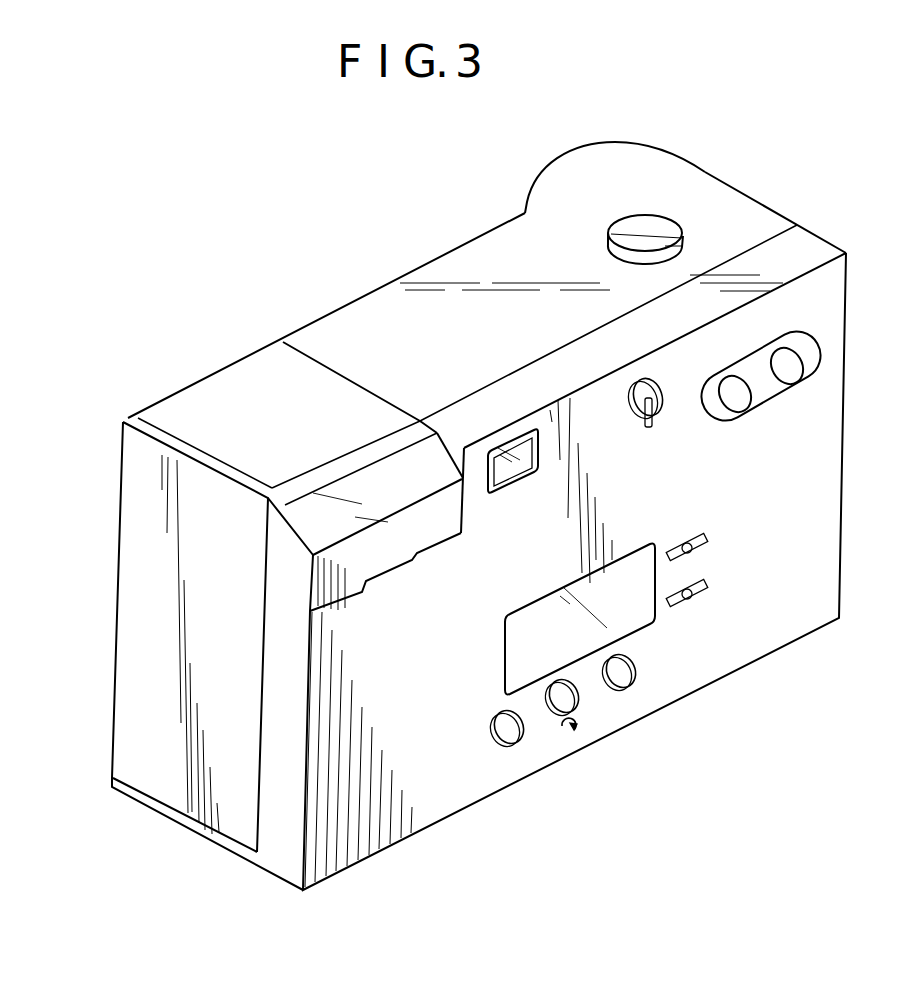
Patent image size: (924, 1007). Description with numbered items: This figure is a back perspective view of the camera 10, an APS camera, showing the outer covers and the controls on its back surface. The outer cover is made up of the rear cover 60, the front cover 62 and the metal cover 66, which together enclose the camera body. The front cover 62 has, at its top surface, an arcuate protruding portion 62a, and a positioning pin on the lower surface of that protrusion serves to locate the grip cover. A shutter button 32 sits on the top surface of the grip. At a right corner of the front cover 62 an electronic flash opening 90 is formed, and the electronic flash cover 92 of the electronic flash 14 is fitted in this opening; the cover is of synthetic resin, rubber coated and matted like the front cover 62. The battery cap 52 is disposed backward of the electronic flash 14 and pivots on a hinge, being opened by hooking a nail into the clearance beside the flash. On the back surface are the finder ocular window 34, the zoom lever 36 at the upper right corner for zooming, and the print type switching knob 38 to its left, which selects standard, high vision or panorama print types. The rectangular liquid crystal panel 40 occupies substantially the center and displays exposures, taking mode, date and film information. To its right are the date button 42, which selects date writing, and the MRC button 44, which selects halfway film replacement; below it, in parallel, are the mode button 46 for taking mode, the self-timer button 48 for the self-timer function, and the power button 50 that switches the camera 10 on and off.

The camera 10 is at (320, 190).
The electronic flash 14 is at (219, 412).
The shutter button 32 is at (643, 230).
The finder ocular window 34 is at (503, 474).
The zoom lever 36 is at (758, 398).
The print type switching knob 38 is at (644, 392).
The liquid crystal panel 40 is at (525, 641).
The date button 42 is at (684, 546).
The MRC button 44 is at (690, 598).
The mode button 46 is at (520, 728).
The self-timer button 48 is at (567, 699).
The power button 50 is at (634, 666).
The battery cap 52 is at (270, 562).
The rear cover 60 is at (813, 524).
The front cover 62 is at (458, 271).
The protruding portion 62a is at (597, 168).
The metal cover 66 is at (145, 557).
The electronic flash opening 90 is at (336, 388).
The electronic flash cover 92 is at (276, 407).